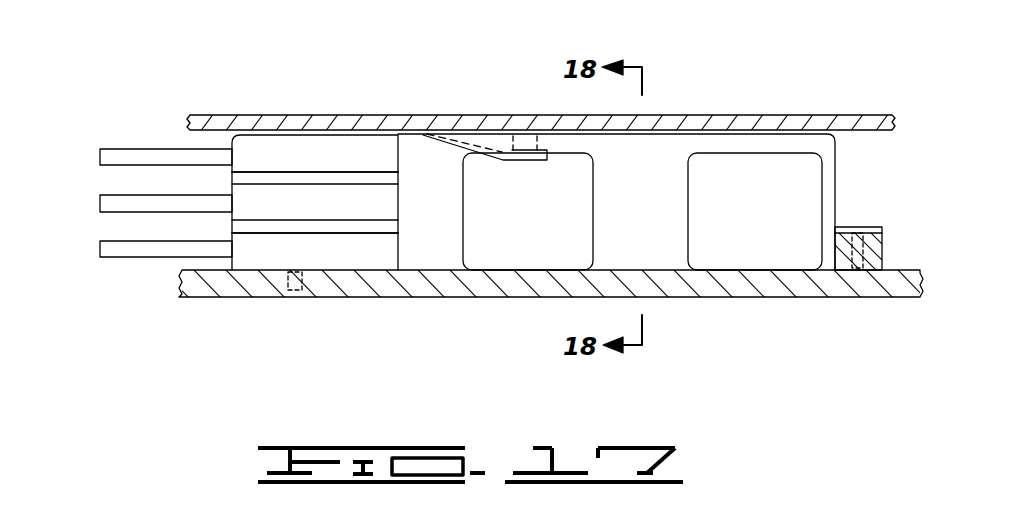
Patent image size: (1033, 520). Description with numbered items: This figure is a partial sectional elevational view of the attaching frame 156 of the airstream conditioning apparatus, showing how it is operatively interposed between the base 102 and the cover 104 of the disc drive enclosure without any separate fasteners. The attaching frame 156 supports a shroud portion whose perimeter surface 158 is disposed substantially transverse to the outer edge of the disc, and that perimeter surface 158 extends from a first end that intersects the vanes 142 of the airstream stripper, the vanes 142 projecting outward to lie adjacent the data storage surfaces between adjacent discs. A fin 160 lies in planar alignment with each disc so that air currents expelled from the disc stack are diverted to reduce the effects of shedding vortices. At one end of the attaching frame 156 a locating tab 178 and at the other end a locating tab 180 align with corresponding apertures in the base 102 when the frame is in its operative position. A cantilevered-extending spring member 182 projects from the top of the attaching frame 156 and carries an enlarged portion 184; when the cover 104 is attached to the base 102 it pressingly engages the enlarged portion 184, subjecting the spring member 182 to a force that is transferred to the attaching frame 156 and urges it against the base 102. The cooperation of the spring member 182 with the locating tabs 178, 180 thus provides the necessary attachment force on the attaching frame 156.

The base 102 is at (430, 297).
The cover 104 is at (720, 113).
The vanes 142 is at (100, 157).
The attaching frame 156 is at (660, 247).
The perimeter surface 158 is at (258, 203).
The fin 160 is at (345, 178).
The locating tabs 178 is at (293, 300).
The locating tabs 180 is at (853, 297).
The spring member 182 is at (472, 145).
The enlarged portion 184 is at (543, 153).